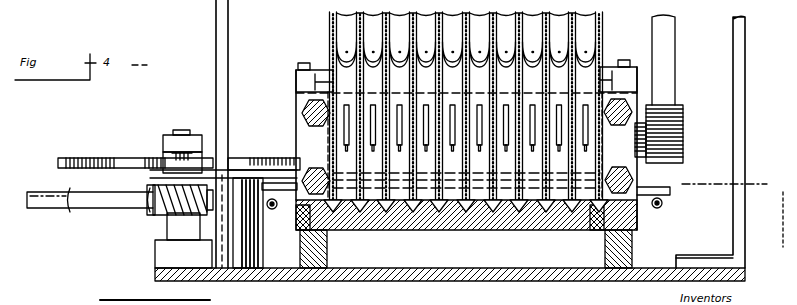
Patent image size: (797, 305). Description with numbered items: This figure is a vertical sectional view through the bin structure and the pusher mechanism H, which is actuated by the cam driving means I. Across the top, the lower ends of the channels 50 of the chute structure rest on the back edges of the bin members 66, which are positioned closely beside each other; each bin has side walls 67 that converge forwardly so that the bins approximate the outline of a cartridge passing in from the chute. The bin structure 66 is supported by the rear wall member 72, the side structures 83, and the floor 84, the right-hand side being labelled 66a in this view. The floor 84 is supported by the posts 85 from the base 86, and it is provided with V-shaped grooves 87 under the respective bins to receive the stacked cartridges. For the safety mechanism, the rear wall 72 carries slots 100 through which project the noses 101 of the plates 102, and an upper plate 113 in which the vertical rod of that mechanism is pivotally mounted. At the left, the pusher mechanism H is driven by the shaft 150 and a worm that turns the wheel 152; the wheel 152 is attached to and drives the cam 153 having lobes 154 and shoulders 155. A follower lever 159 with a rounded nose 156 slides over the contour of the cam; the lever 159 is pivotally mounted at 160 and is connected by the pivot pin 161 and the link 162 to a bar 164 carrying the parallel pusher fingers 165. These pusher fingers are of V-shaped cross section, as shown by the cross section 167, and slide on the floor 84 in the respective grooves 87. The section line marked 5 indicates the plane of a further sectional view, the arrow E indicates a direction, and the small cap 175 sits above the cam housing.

The channels 50 is at (367, 22).
The bin members 66 is at (333, 42).
The guide frame side 66a is at (619, 148).
The side walls 67 is at (466, 76).
The rear wall member 72 is at (296, 99).
The side structures 83 is at (303, 114).
The upper plate 113 is at (298, 70).
The slots 100 is at (348, 146).
The noses 101 is at (401, 146).
The plates 102 is at (373, 105).
The link 162 is at (520, 181).
The bar 164 is at (684, 182).
The cross section 167 is at (302, 228).
The floor 84 is at (408, 232).
The V-shaped grooves 87 is at (373, 218).
The pusher fingers 165 is at (433, 208).
The posts 85 is at (327, 248).
The base 86 is at (440, 281).
The shaft 150 is at (48, 210).
The wheel 152 is at (150, 192).
The pivot pin 161 is at (158, 210).
The lobes 154 is at (64, 158).
The shoulders 155 is at (160, 150).
The cap 175 is at (185, 127).
The rounded nose 156 is at (182, 163).
The cam 153 is at (237, 158).
The pivot 160 is at (247, 158).
The follower lever 159 is at (272, 170).
The section line 5 is at (22, 187).
The cam driving means I is at (98, 151).
The direction arrow E is at (613, 56).
The pusher mechanism H is at (472, 245).